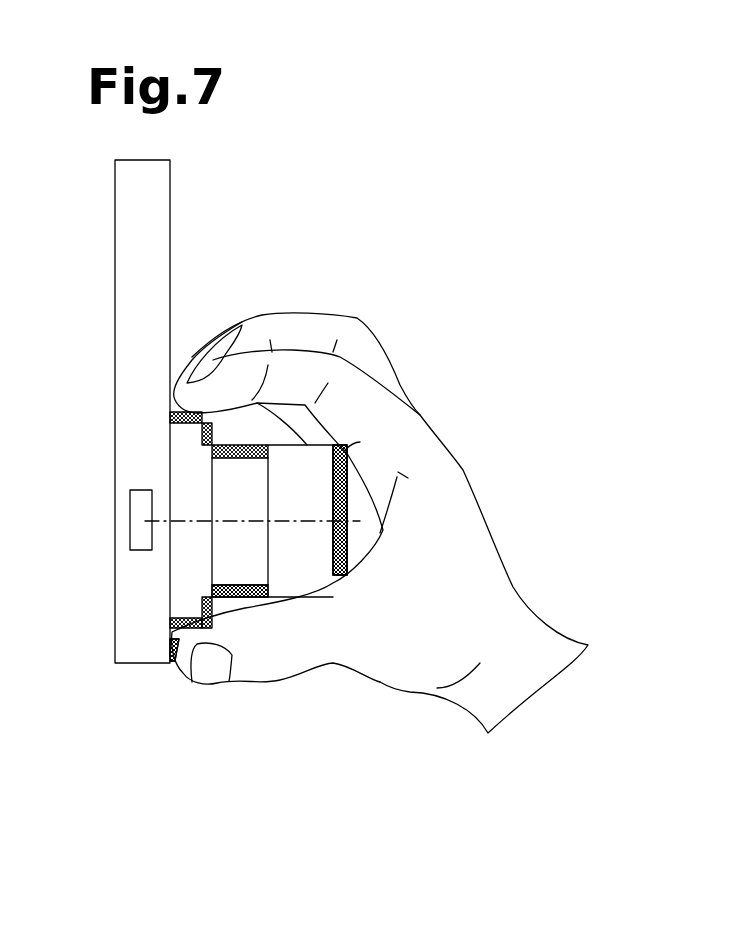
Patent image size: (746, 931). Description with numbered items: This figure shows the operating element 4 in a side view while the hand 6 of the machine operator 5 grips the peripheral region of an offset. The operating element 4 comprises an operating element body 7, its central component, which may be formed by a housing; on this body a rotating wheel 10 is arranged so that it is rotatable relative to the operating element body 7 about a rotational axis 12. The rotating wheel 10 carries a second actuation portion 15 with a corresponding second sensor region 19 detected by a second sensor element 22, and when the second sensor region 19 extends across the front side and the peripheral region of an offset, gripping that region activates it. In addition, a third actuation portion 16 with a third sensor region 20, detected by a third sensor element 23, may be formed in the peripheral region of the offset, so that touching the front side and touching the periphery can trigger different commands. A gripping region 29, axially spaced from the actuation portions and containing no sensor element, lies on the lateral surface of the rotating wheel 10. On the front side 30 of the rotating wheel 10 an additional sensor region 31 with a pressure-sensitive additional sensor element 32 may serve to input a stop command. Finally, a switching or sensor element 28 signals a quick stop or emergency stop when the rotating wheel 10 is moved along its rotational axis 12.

The operating element 4 is at (237, 138).
The machine operator 5 is at (380, 601).
The hand 6 is at (412, 675).
The operating element body 7 is at (120, 188).
The rotating wheel 10 is at (248, 421).
The rotational axis 12 is at (185, 522).
The second actuation portion 15 is at (237, 612).
The second sensor region 19 is at (240, 591).
The third actuation portion 16 is at (177, 640).
The third sensor region 20 is at (174, 650).
The second sensor element 22 is at (213, 600).
The third sensor element 23 is at (177, 633).
The switching or sensor element 28 is at (133, 495).
The gripping region 29 is at (358, 497).
The front side 30 is at (340, 510).
The additional sensor region 31 is at (340, 510).
The additional sensor element 32 is at (357, 443).